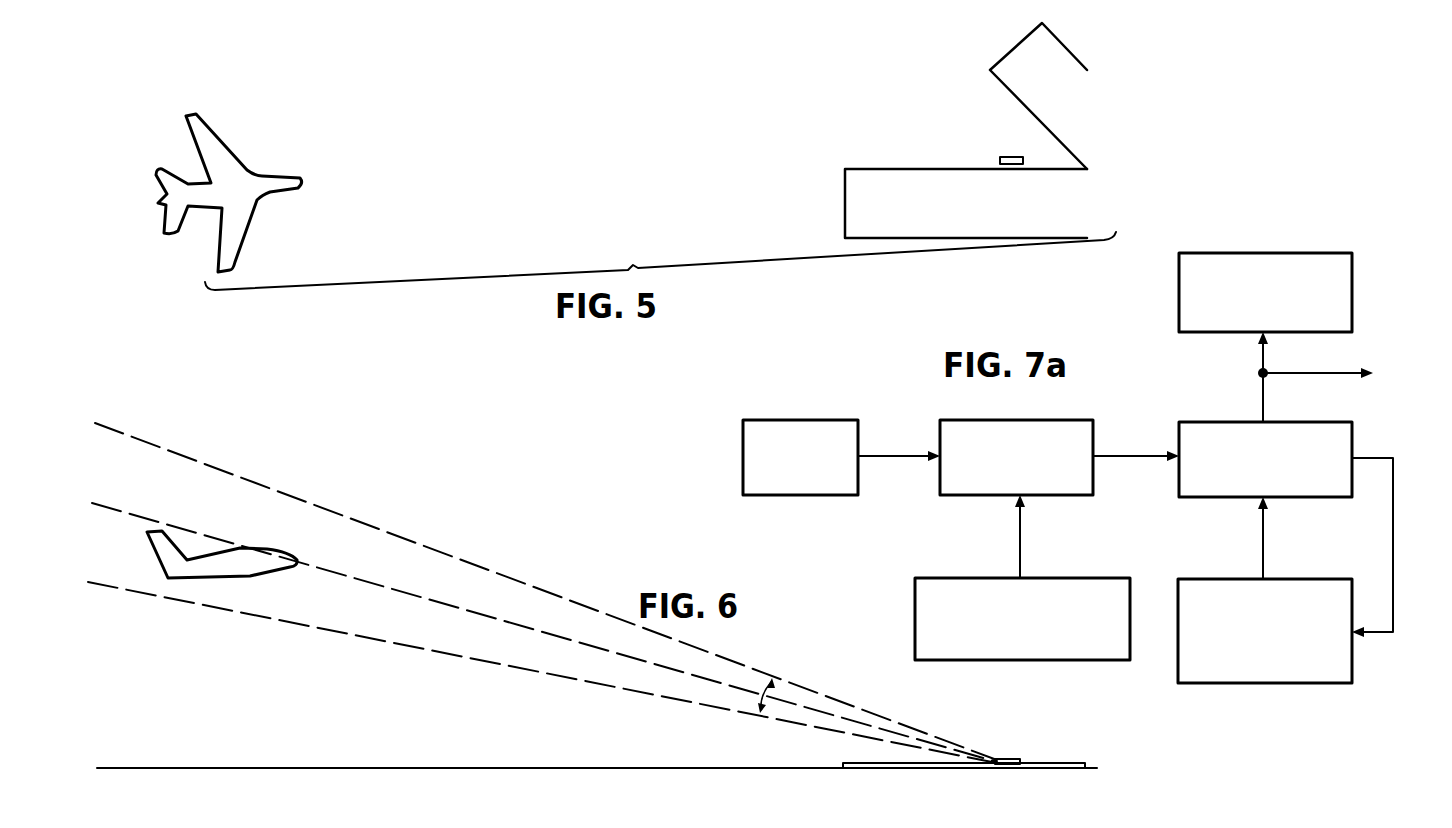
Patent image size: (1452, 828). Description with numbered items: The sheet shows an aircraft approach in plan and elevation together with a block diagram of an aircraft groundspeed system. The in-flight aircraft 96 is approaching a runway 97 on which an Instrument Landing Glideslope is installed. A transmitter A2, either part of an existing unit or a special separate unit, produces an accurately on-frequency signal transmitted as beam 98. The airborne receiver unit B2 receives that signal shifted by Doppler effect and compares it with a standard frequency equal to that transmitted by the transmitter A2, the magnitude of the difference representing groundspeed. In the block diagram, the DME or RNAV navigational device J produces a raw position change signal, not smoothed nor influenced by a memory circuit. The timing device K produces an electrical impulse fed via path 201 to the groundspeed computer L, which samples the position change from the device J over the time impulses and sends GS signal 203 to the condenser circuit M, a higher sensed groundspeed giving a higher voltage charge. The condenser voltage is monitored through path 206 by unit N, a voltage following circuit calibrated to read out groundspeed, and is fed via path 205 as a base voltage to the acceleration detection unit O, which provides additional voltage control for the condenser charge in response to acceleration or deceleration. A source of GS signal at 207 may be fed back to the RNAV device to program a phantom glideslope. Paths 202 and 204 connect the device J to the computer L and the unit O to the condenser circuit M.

In FIG. 5, the in-flight aircraft 96 is at (232, 155).
In FIG. 6, the in-flight aircraft 96 is at (240, 548).
In FIG. 5, the airborne receiver unit B2 is at (300, 185).
In FIG. 6, the airborne receiver unit B2 is at (297, 563).
In FIG. 5, the runway 97 is at (845, 217).
In FIG. 6, the runway 97 is at (857, 762).
In FIG. 5, the transmitter A2 is at (1002, 148).
In FIG. 6, the transmitter A2 is at (1026, 751).
In FIG. 6, the beam 98 is at (770, 697).
In FIG. 7A, the timing device K is at (817, 422).
In FIG. 7A, the groundspeed computer L is at (1022, 422).
In FIG. 7A, the condenser circuit M is at (1352, 445).
In FIG. 7A, the voltage following circuit unit N is at (1285, 253).
In FIG. 7A, the DME or RNAV navigational device J is at (1020, 661).
In FIG. 7A, the acceleration detection unit O is at (1312, 683).
In FIG. 7A, the path 201 is at (890, 457).
In FIG. 7A, the position change signal line 202 is at (1022, 548).
In FIG. 7A, the GS signal 203 is at (1115, 455).
In FIG. 7A, the acceleration signal line 204 is at (1262, 542).
In FIG. 7A, the path 205 is at (1393, 520).
In FIG. 7A, the path 206 is at (1262, 355).
In FIG. 7A, the source of GS signal 207 is at (1341, 374).